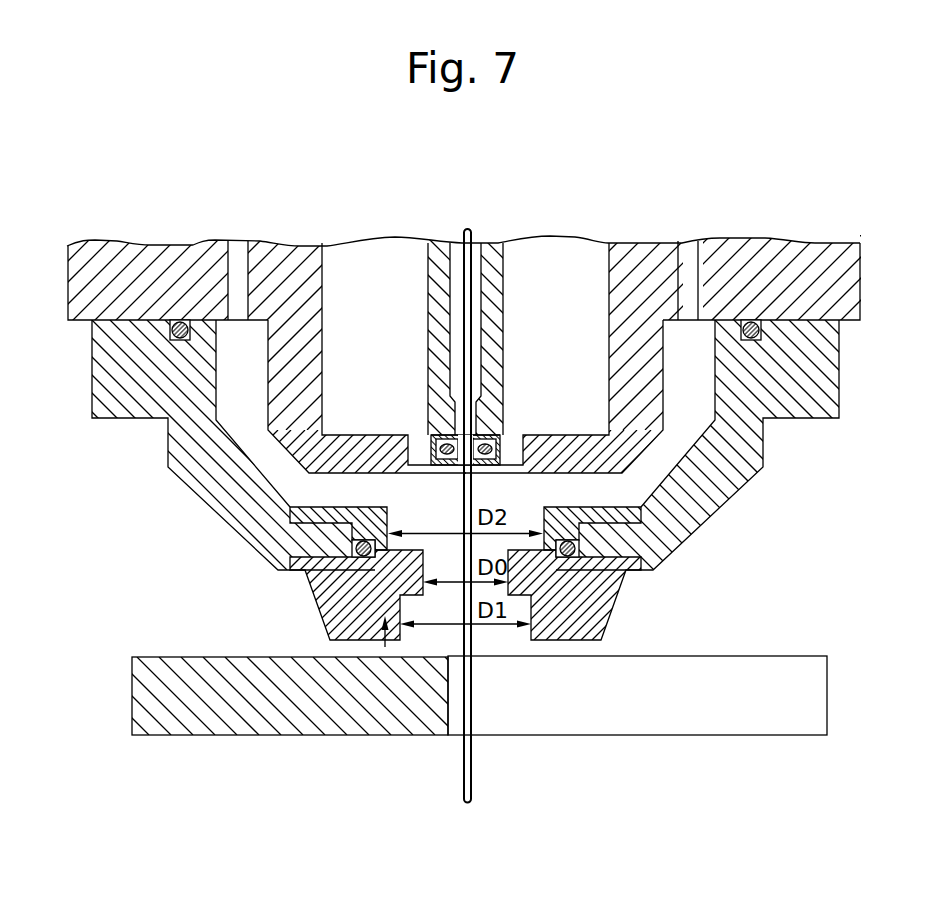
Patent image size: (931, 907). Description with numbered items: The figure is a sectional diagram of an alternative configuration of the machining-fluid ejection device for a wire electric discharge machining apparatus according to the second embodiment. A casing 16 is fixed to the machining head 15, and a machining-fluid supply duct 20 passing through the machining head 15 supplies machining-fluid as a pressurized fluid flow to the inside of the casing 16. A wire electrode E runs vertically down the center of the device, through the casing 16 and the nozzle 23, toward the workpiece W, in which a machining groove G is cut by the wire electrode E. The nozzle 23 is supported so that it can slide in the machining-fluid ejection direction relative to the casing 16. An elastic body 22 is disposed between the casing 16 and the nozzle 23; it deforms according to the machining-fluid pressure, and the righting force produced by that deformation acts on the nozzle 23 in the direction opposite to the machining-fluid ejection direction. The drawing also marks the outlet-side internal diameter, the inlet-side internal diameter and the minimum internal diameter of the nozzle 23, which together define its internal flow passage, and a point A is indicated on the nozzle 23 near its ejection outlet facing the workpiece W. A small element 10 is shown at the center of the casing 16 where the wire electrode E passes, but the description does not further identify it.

The machining head 15 is at (72, 286).
The casing 16 is at (172, 450).
The machining-fluid supply duct 20 is at (238, 243).
The bearing holder 10 is at (485, 440).
The elastic body 22 is at (362, 545).
The nozzle 23 is at (578, 532).
The point A is at (385, 647).
The workpiece W is at (138, 690).
The machining groove G is at (533, 718).
The wire electrode E is at (462, 772).